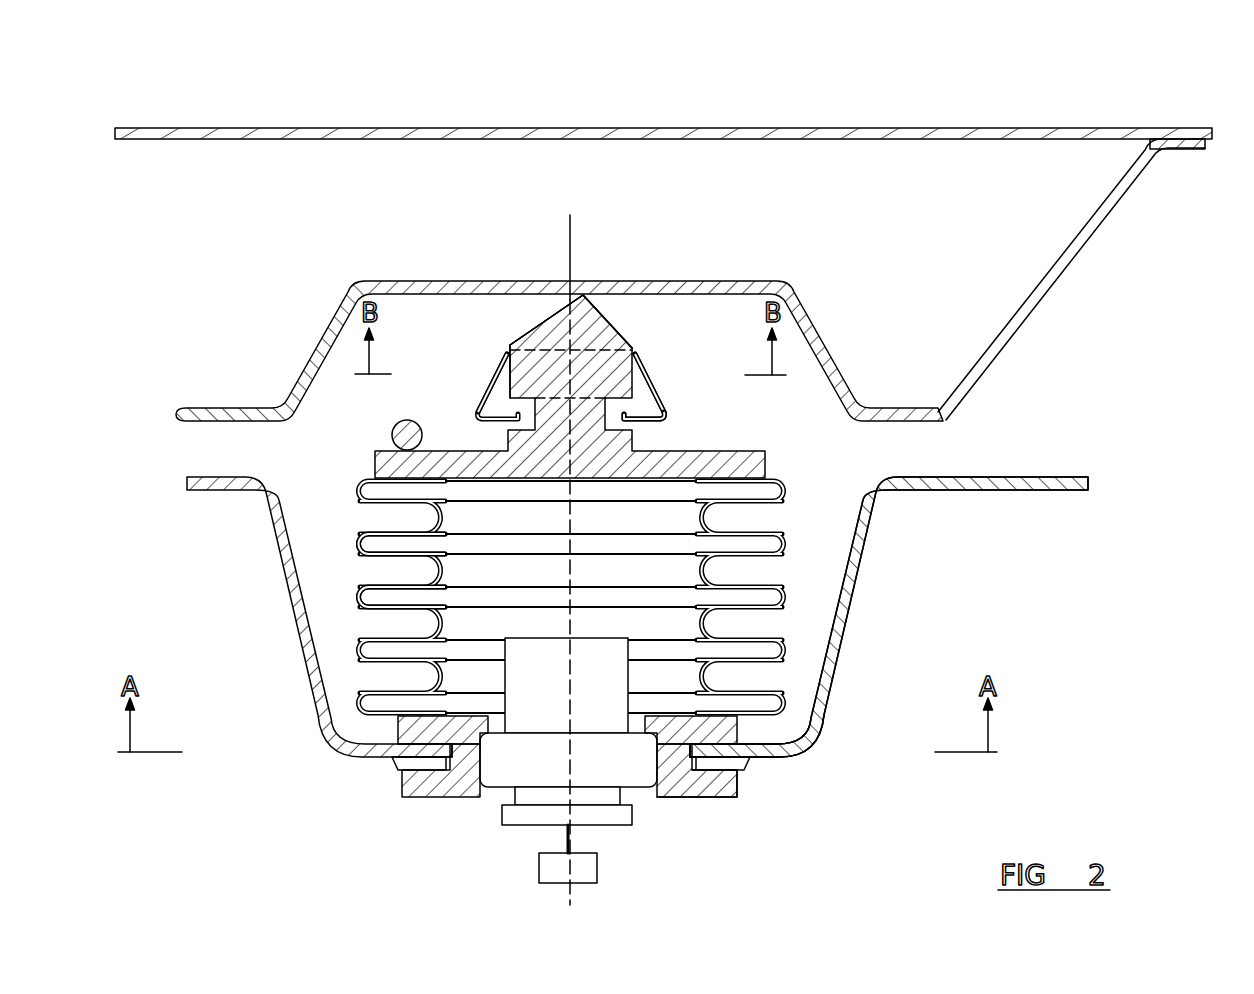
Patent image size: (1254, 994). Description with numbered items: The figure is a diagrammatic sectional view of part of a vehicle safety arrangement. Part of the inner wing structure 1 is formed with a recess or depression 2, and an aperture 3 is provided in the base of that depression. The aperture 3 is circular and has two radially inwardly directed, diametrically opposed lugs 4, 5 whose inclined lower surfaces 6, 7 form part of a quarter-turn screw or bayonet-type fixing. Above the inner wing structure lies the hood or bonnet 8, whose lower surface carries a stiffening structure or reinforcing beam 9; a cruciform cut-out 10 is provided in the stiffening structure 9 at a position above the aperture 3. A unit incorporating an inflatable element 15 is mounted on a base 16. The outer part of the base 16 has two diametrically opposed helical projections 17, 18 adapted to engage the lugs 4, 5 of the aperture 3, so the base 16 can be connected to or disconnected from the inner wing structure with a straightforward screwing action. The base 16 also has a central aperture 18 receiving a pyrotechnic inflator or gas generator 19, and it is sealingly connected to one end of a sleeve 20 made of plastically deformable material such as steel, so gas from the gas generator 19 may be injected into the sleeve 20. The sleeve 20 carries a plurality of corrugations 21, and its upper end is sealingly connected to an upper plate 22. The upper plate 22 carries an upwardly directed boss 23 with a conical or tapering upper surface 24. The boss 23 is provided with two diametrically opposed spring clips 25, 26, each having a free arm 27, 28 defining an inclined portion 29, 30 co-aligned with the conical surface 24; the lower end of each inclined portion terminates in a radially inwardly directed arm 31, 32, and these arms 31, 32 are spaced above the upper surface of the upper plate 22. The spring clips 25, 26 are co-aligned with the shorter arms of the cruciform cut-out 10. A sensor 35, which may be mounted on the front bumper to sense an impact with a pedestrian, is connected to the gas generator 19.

The inner wing structure 1 is at (1045, 478).
The recess or depression 2 is at (836, 630).
The aperture 3 is at (692, 762).
The lug 4 is at (737, 772).
The lug 5 is at (412, 765).
The inclined lower surface 6 is at (713, 772).
The inclined lower surface 7 is at (397, 777).
The hood or bonnet 8 is at (893, 128).
The stiffening structure or reinforcing beam 9 is at (1078, 252).
The cut-out 10 is at (530, 281).
The inflatable element 15 is at (778, 575).
The base 16 is at (450, 790).
The helical projection 17 is at (823, 722).
The helical projection / central aperture 18 is at (398, 718).
The pyrotechnic inflator or gas generator 19 is at (597, 768).
The sleeve 20 is at (354, 594).
The corrugations 21 is at (354, 542).
The upper plate 22 is at (378, 464).
The boss 23 is at (496, 340).
The conical or tapering upper surface 24 is at (636, 348).
The spring clip 25 is at (643, 352).
The spring clip 26 is at (492, 360).
The free arm 27 is at (672, 418).
The free arm 28 is at (468, 414).
The inclined portion 29 is at (655, 368).
The inclined portion 30 is at (480, 385).
The radially inwardly directed arm 31 is at (648, 426).
The radially inwardly directed arm 32 is at (500, 430).
The sensor 35 is at (600, 865).